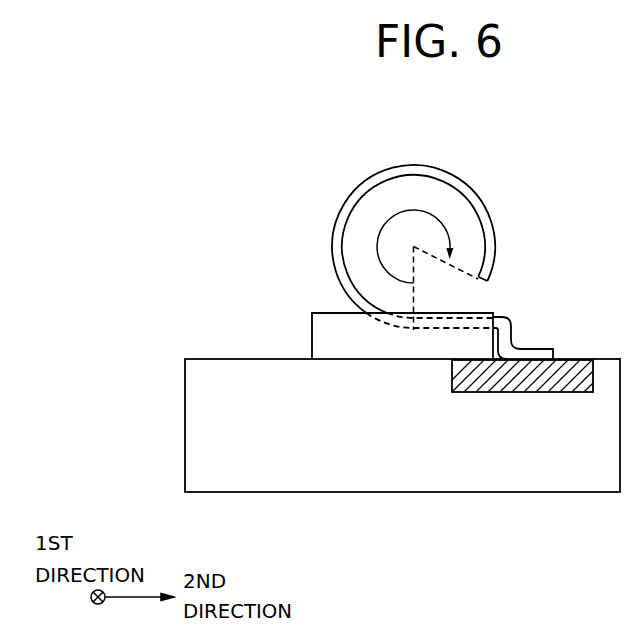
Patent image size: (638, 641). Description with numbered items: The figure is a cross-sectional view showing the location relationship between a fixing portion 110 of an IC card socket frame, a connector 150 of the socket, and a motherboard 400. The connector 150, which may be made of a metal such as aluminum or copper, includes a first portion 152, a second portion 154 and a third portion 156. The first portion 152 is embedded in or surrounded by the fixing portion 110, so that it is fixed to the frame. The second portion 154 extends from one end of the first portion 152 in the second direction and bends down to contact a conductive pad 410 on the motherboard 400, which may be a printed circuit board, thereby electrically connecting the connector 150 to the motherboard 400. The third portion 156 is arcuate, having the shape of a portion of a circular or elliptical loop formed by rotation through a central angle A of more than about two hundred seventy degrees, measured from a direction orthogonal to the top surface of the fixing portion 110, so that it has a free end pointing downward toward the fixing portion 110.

The fixing portion 110 is at (343, 347).
The connector 150 is at (477, 262).
The first portion 152 is at (462, 320).
The second portion 154 is at (531, 329).
The third portion 156 is at (490, 239).
The motherboard 400 is at (432, 460).
The conductive pad 410 is at (510, 382).